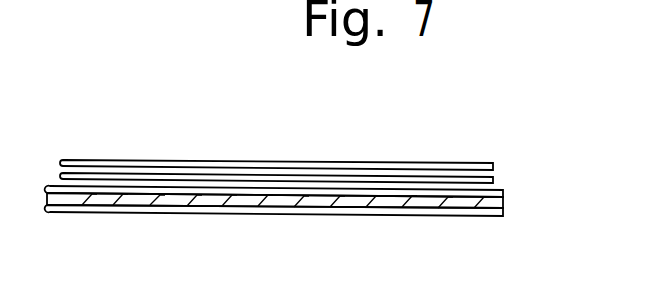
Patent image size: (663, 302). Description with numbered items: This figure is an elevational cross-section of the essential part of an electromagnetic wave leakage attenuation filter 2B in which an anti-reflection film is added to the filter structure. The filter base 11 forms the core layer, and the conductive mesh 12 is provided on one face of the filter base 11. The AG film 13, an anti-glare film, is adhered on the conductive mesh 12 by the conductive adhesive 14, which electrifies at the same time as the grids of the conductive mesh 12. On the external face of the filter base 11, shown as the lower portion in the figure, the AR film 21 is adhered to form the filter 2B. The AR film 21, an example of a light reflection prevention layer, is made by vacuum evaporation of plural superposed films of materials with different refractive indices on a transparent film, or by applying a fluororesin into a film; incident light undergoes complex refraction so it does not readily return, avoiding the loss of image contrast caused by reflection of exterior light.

The filter 2B is at (350, 150).
The AG film 13 is at (474, 163).
The conductive adhesive 14 is at (493, 181).
The conductive mesh 12 is at (503, 190).
The filter base 11 is at (505, 203).
The AR film 21 is at (500, 217).